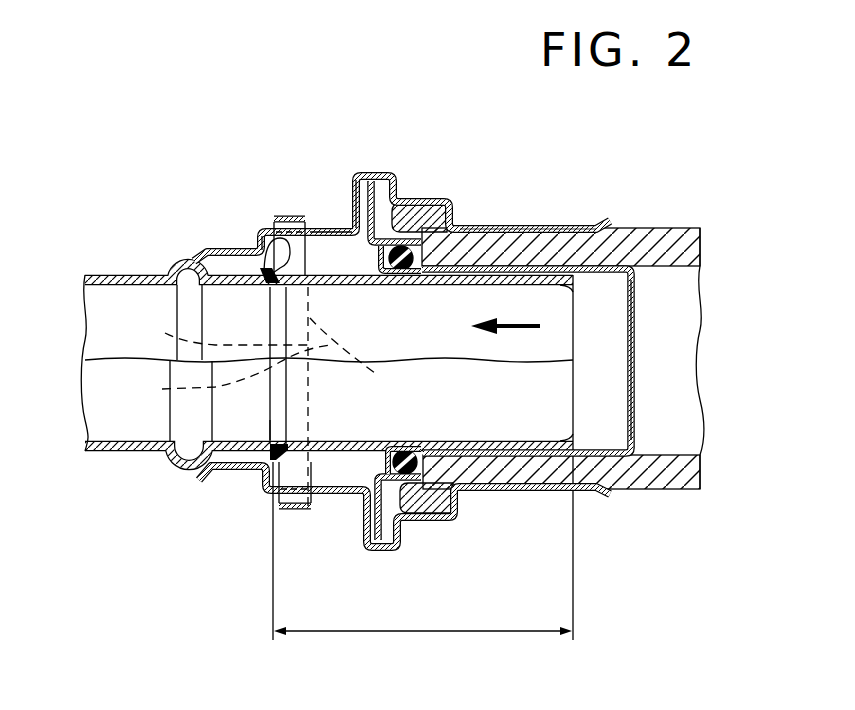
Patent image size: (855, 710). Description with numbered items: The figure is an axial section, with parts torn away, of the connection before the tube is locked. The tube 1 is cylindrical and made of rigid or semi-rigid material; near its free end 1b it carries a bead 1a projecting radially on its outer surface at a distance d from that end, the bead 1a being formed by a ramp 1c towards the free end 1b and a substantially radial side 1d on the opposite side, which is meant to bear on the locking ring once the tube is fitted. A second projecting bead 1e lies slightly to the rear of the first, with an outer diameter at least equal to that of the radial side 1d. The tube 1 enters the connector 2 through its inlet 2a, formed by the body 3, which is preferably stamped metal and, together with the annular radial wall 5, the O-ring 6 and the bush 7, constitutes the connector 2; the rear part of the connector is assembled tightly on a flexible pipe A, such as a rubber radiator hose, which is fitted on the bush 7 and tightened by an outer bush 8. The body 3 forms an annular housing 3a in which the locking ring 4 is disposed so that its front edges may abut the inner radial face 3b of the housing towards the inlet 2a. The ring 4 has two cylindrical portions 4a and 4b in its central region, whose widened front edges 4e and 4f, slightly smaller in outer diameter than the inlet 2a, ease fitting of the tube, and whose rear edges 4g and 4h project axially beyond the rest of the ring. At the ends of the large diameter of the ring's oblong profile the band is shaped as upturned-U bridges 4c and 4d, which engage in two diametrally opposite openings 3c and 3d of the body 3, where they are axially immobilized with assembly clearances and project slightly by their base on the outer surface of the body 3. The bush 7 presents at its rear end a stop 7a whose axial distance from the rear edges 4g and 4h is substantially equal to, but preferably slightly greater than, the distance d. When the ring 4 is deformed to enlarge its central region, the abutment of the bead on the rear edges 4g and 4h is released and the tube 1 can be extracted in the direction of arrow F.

The tube 1 is at (121, 270).
The bead 1a is at (289, 437).
The free end 1b is at (574, 422).
The ramp 1c is at (286, 456).
The radial side 1d is at (262, 429).
The second projecting bead 1e is at (176, 268).
The connector 2 is at (377, 310).
The inlet 2a is at (226, 474).
The body 3 is at (320, 341).
The annular housing 3a is at (346, 265).
The inner radial face 3b is at (270, 248).
The opening 3c is at (313, 226).
The opening 3d is at (326, 494).
The locking ring 4 is at (271, 327).
The cylindrical portion 4a is at (208, 375).
The cylindrical portion 4b is at (208, 375).
The bridge 4c is at (281, 210).
The bridge 4d is at (302, 510).
The front edge 4e is at (202, 329).
The front edge 4f is at (202, 329).
The rear edge 4g is at (381, 397).
The rear edge 4h is at (381, 397).
The annular radial wall 5 is at (372, 242).
The O-ring 6 is at (396, 266).
The bush 7 is at (553, 361).
The stop 7a is at (634, 283).
The outer bush 8 is at (512, 226).
The flexible pipe A is at (676, 248).
The distance d is at (422, 551).
The arrow F is at (505, 316).